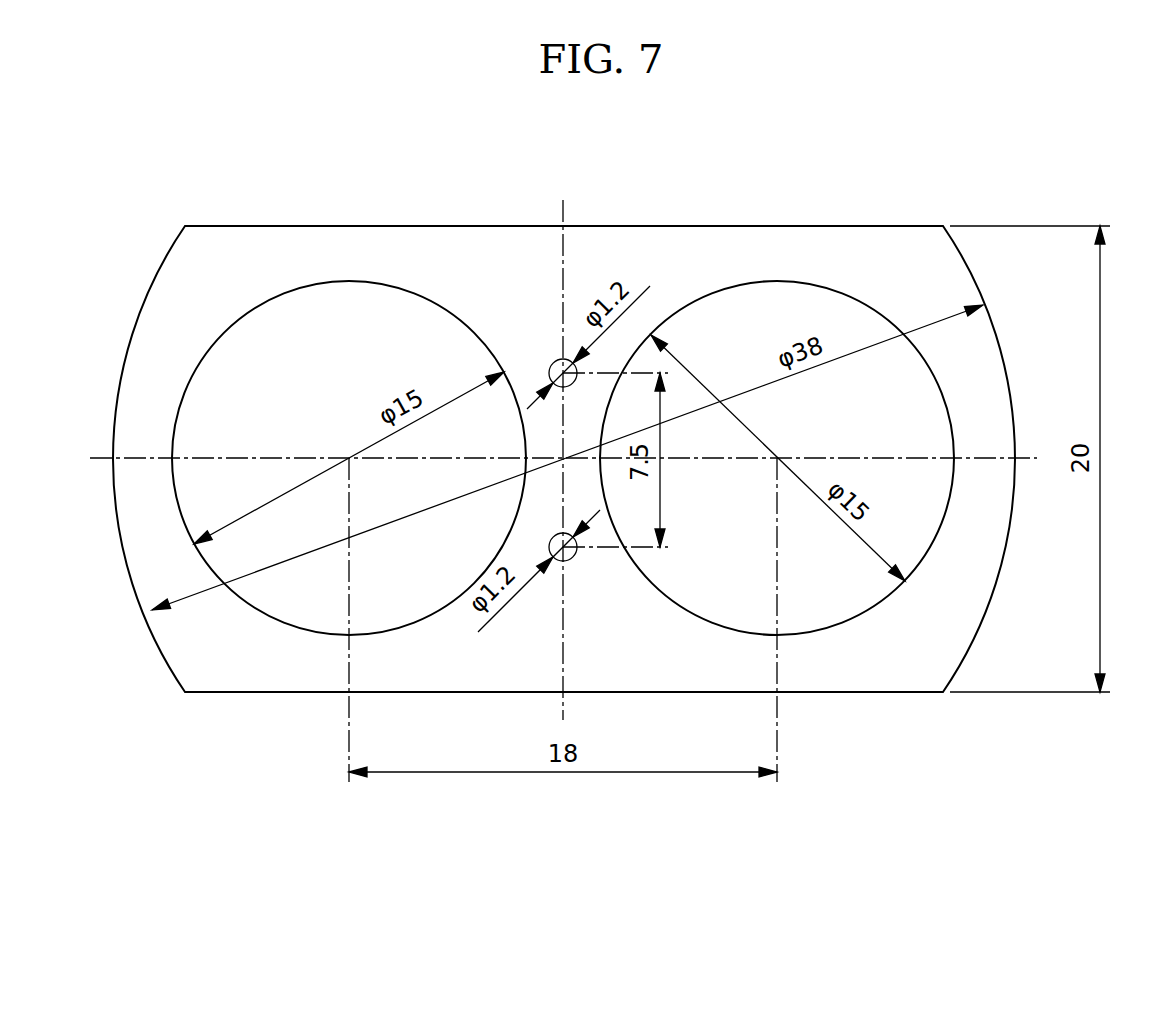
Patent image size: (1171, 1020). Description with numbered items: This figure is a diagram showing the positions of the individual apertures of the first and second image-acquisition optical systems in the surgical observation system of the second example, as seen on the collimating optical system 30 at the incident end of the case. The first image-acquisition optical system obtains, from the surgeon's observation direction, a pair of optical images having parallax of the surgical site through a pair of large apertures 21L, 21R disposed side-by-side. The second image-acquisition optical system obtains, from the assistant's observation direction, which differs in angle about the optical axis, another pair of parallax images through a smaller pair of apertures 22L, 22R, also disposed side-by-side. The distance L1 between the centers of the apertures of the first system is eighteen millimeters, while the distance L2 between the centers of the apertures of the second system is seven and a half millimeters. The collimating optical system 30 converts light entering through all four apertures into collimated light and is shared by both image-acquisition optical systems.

The collimating optical system 30 is at (637, 226).
The aperture 21L is at (262, 306).
The aperture 21R is at (846, 295).
The aperture 22L is at (555, 361).
The aperture 22R is at (572, 558).
The distance between centers of the apertures of the first image-acquisition optical L1 is at (563, 775).
The distance between centers of the apertures of the second image-acquisition optica L2 is at (660, 497).